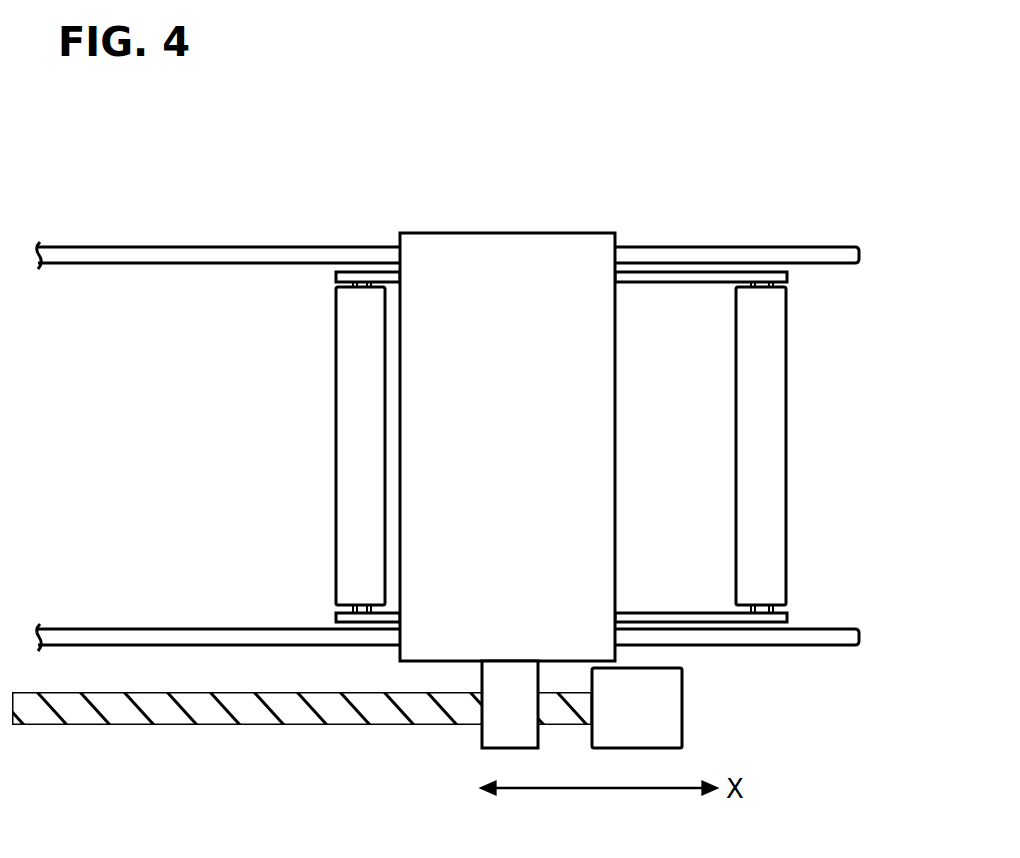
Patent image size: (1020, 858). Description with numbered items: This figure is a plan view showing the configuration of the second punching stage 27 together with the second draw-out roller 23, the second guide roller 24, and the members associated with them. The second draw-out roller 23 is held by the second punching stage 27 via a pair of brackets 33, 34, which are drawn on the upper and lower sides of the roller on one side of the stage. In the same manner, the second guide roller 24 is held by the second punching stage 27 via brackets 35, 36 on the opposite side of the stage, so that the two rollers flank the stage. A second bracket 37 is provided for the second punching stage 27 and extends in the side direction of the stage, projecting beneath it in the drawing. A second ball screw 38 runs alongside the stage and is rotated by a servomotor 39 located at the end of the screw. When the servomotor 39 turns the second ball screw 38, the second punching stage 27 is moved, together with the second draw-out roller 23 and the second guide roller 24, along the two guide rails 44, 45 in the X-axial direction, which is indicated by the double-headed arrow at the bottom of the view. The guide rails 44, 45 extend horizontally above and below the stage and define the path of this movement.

The second draw-out roller 23 is at (345, 430).
The second guide roller 24 is at (777, 414).
The second punching stage 27 is at (540, 250).
The bracket 33 is at (336, 281).
The bracket 34 is at (336, 618).
The bracket 35 is at (702, 277).
The bracket 36 is at (745, 622).
The second bracket 37 is at (494, 734).
The second ball screw 38 is at (82, 714).
The servomotor 39 is at (670, 733).
The guide rail 44 is at (130, 252).
The guide rail 45 is at (141, 632).